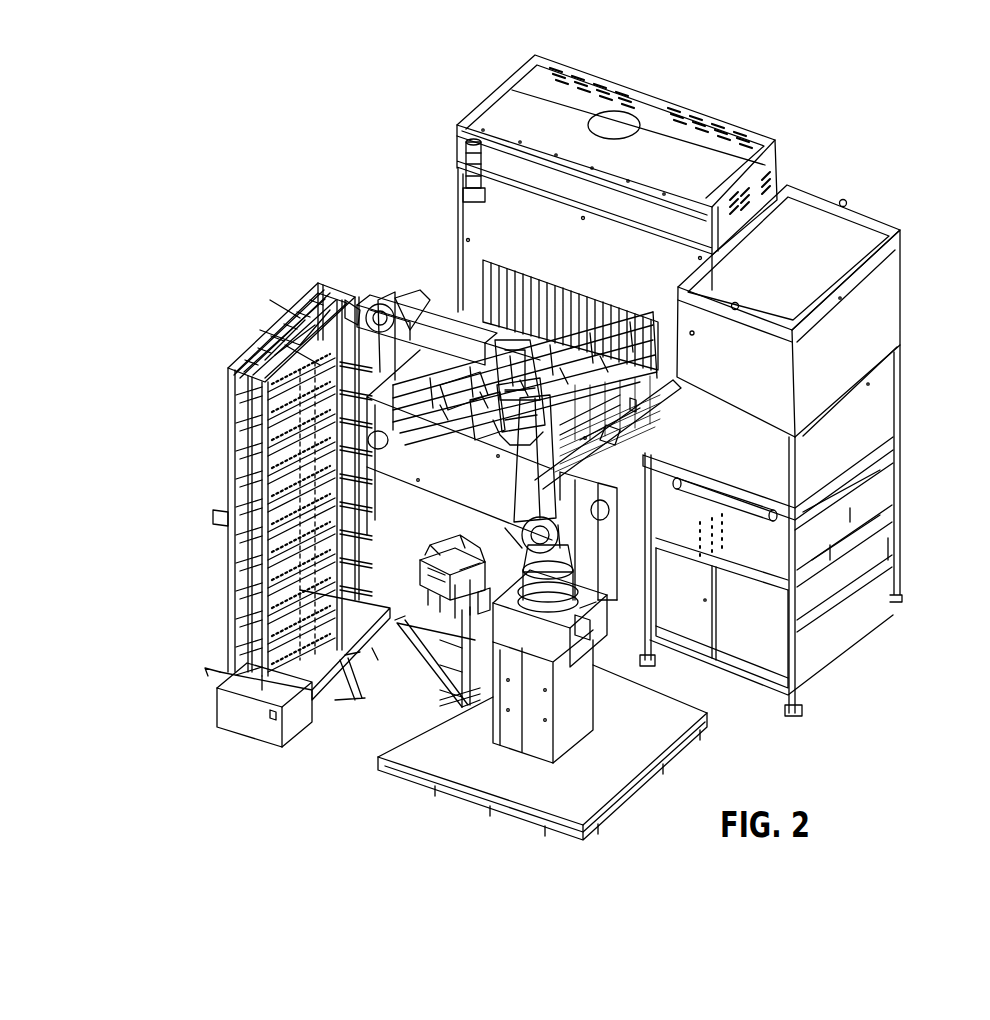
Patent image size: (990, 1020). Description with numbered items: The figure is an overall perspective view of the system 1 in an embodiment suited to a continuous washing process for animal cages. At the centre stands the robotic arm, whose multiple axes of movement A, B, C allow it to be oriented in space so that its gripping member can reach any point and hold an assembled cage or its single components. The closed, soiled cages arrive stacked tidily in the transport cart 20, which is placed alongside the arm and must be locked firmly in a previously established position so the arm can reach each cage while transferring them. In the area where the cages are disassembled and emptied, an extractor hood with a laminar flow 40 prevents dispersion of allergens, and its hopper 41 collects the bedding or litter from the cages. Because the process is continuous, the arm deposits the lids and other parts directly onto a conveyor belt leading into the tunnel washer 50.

The system 1 is at (699, 751).
The transport cart 20 is at (237, 323).
The extractor hood with a laminar flow 40 is at (926, 224).
The hopper 41 is at (743, 545).
The tunnel washer 50 is at (427, 173).
The axis of movement A is at (532, 613).
The axis of movement B is at (438, 613).
The axis of movement C is at (478, 465).